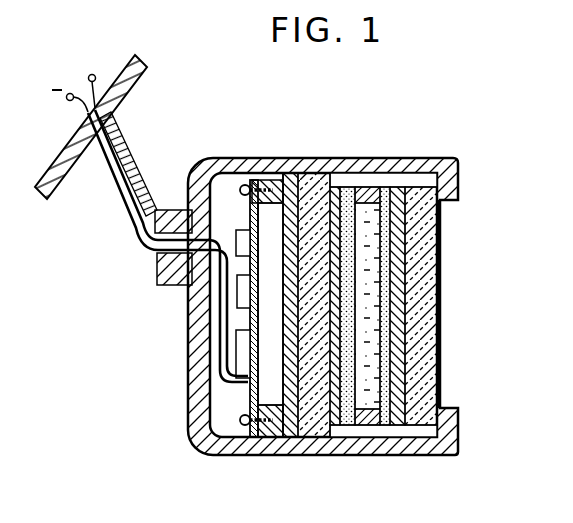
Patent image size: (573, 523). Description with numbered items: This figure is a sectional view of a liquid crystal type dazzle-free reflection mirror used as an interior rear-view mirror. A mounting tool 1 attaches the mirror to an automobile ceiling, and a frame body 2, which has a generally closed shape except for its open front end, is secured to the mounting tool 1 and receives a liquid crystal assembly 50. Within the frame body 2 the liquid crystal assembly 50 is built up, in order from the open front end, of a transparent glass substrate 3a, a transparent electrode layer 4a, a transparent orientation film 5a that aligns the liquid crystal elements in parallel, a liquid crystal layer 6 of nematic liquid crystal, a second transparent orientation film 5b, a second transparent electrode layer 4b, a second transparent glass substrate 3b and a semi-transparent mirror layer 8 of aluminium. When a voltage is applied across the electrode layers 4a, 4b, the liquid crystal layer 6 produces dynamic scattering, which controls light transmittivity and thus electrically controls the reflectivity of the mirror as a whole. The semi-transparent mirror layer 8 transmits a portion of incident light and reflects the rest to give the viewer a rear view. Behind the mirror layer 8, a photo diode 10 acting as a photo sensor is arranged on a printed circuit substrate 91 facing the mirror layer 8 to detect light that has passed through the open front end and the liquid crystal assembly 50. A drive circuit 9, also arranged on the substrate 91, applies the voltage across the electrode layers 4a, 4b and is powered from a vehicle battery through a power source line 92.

The mounting tool 1 is at (124, 92).
The frame body 2 is at (398, 156).
The transparent glass substrate 3a is at (437, 216).
The transparent glass substrate 3b is at (312, 410).
The transparent electrode layer 4a is at (433, 226).
The transparent electrode layer 4b is at (333, 345).
The transparent orientation film 5a is at (387, 250).
The transparent orientation film 5b is at (345, 315).
The liquid crystal layer 6 is at (368, 273).
The semi-transparent mirror layer 8 is at (272, 418).
The drive circuit 9 is at (238, 350).
The photo diode 10 is at (265, 262).
The liquid crystal assembly 50 is at (452, 383).
The printed circuit substrate 91 is at (240, 205).
The power source line 92 is at (196, 202).